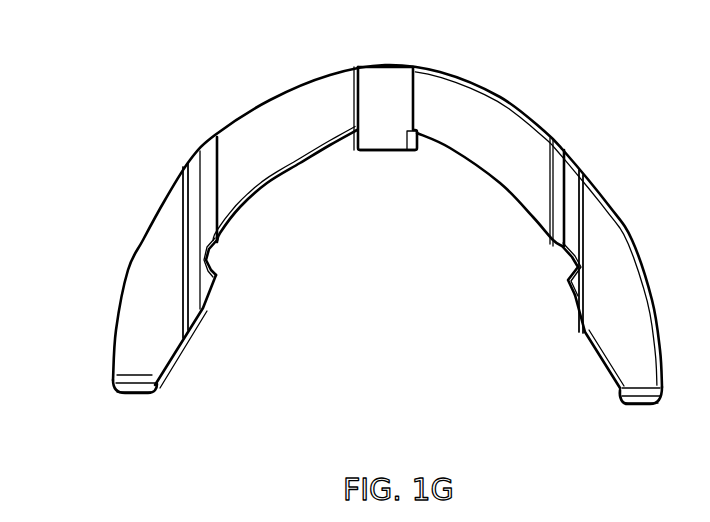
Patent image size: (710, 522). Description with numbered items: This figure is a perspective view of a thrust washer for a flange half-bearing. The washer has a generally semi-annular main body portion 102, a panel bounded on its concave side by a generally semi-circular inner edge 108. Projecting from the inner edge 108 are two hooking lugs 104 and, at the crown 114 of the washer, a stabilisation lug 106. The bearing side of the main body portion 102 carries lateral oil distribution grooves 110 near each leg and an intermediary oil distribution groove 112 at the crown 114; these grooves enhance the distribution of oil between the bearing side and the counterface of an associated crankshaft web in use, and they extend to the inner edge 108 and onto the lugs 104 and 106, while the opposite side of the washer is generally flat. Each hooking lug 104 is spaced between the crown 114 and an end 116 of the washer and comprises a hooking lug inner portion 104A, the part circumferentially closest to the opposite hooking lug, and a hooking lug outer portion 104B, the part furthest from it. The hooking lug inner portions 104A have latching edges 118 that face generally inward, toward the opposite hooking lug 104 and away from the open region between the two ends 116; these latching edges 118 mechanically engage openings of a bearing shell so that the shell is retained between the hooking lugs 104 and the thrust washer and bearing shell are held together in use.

The main body portion 102 is at (298, 145).
The hooking lugs 104 is at (308, 418).
The hooking lug inner portion 104A is at (203, 310).
The hooking lug outer portion 104B is at (185, 333).
The stabilisation lug 106 is at (381, 152).
The inner edge 108 is at (265, 188).
The lateral oil distribution grooves 110 is at (210, 158).
The intermediary oil distribution groove 112 is at (389, 87).
The crown 114 is at (380, 66).
The end 116 is at (140, 397).
The latching edges 118 is at (214, 268).